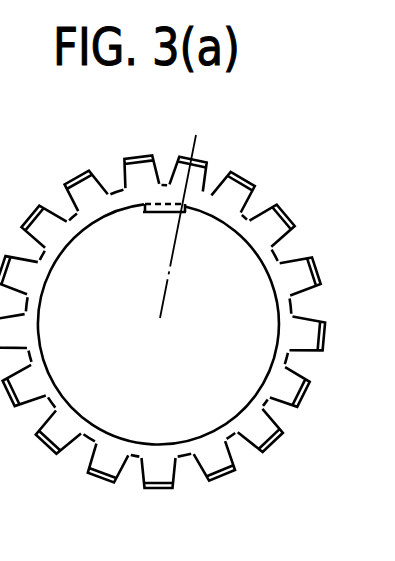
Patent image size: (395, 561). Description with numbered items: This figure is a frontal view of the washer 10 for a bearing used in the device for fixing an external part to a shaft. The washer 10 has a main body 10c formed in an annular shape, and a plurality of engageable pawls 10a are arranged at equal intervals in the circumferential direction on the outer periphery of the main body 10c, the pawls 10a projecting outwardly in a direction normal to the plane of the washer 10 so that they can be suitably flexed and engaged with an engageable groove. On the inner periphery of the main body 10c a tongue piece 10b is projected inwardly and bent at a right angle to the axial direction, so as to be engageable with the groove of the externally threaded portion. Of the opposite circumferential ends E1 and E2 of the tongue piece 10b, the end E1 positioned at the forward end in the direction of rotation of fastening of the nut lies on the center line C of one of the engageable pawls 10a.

The washer 10 is at (328, 137).
The engageable pawls 10a is at (199, 168).
The tongue piece 10b is at (147, 211).
The main body 10c is at (261, 213).
The end of the tongue piece E1 is at (187, 209).
The end of the tongue piece E2 is at (141, 211).
The center line C is at (167, 288).